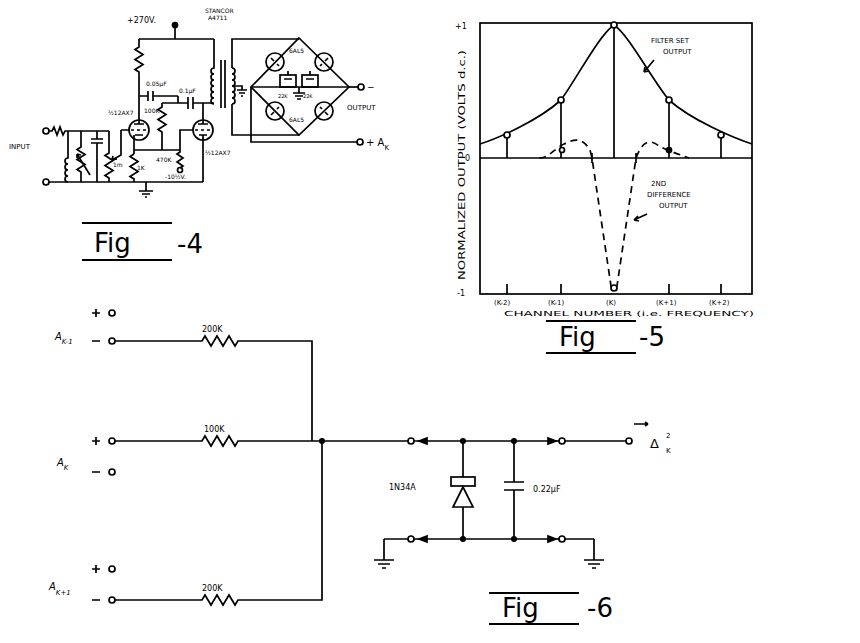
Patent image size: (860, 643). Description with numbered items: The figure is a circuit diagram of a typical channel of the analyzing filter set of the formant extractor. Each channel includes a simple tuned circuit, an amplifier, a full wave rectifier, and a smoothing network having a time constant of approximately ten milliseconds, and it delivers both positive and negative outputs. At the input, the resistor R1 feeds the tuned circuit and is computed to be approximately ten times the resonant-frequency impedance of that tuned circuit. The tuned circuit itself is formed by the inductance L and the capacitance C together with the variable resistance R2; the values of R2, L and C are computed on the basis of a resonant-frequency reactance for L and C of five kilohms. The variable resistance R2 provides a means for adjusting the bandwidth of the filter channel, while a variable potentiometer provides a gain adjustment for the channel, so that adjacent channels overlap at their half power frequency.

The resistor R1 is at (79, 125).
The variable resistance R2 is at (80, 156).
The inductance L is at (62, 156).
The capacitance C is at (97, 150).